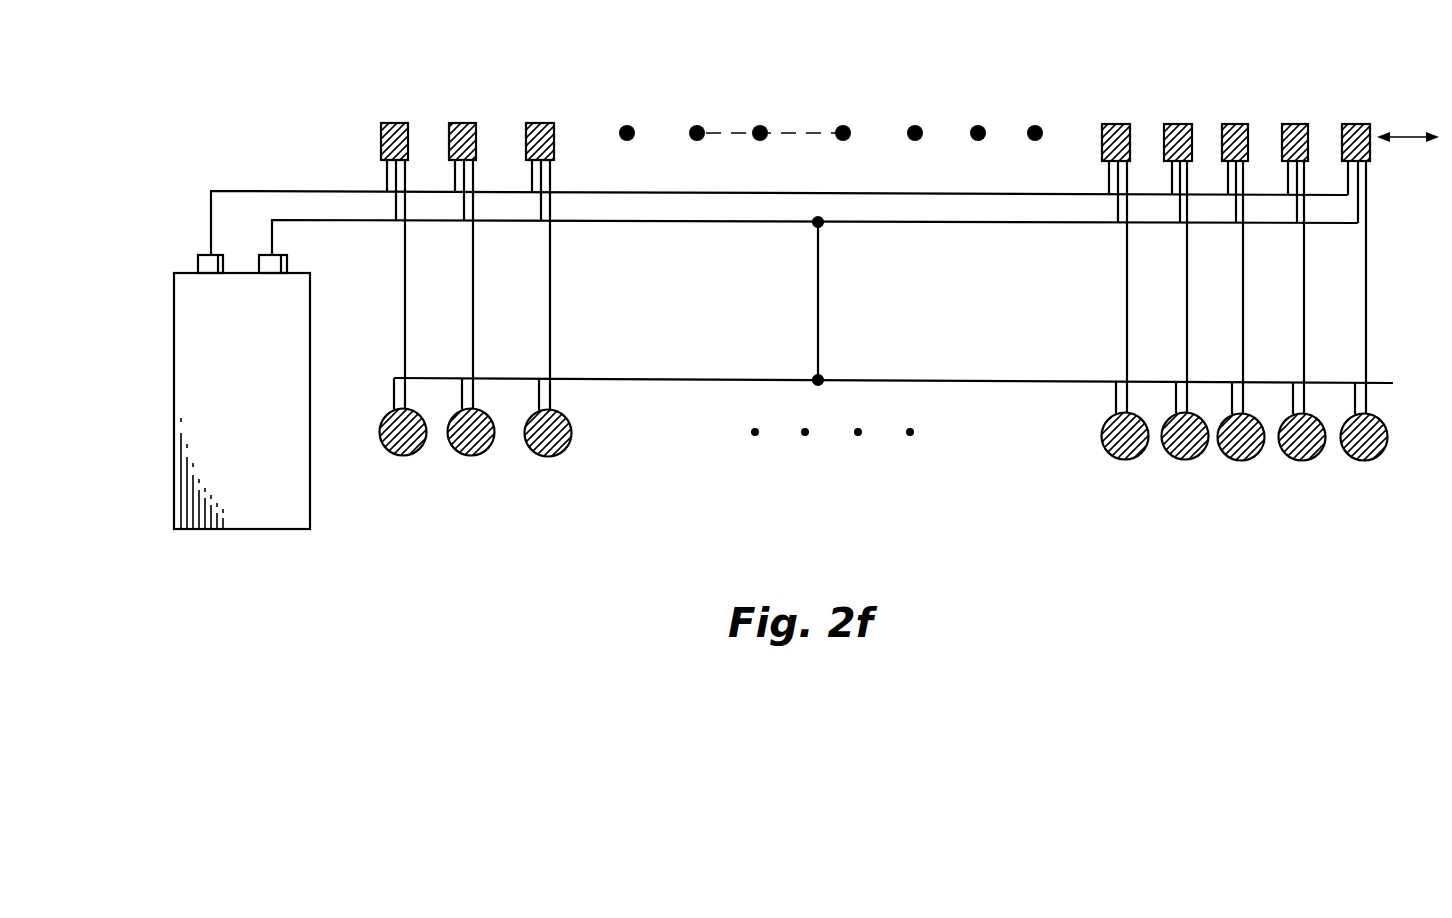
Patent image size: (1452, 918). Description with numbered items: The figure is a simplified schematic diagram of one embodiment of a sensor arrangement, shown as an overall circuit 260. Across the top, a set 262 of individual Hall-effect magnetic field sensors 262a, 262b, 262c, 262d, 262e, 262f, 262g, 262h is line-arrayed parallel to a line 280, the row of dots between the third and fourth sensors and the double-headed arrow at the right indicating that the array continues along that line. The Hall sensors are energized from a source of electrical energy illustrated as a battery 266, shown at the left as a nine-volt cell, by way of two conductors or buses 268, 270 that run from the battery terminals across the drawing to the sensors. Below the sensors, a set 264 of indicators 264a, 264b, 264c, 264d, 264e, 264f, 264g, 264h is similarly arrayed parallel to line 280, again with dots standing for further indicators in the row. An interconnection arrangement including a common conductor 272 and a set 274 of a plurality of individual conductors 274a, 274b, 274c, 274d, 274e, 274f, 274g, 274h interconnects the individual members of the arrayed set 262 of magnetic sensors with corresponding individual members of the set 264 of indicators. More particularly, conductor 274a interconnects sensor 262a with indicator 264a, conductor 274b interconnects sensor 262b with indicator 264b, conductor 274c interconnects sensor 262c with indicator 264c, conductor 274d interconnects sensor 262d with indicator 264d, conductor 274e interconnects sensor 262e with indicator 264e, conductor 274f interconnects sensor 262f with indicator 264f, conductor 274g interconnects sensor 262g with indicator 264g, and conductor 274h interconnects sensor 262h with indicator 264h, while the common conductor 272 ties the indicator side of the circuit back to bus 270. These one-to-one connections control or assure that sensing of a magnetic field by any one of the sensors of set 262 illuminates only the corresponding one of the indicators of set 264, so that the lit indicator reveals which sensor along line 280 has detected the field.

The lighting circuit 260 is at (824, 550).
The set of Hall-effect magnetic field sensors 262 is at (326, 128).
The Hall-effect magnetic field sensor 262a is at (393, 123).
The Hall-effect magnetic field sensor 262b is at (468, 123).
The Hall-effect magnetic field sensor 262c is at (546, 123).
The Hall-effect magnetic field sensor 262d is at (1108, 124).
The Hall-effect magnetic field sensor 262e is at (1173, 124).
The Hall-effect magnetic field sensor 262f is at (1238, 124).
The Hall-effect magnetic field sensor 262g is at (1297, 124).
The Hall-effect magnetic field sensor 262h is at (1360, 124).
The set of indicators 264 is at (720, 434).
The indicator 264a is at (408, 457).
The indicator 264b is at (477, 457).
The indicator 264c is at (553, 457).
The indicator 264d is at (1101, 438).
The indicator 264e is at (1186, 460).
The indicator 264f is at (1242, 460).
The indicator 264g is at (1303, 460).
The indicator 264h is at (1366, 460).
The battery 266 is at (257, 529).
The conductor or bus 268 is at (211, 210).
The conductor or bus 270 is at (352, 220).
The common conductor 272 is at (820, 268).
The set of individual conductors 274 is at (390, 322).
The conductor 274a is at (404, 288).
The conductor 274b is at (473, 263).
The conductor 274c is at (553, 263).
The conductor 274d is at (1127, 248).
The conductor 274e is at (1187, 290).
The conductor 274f is at (1242, 345).
The conductor 274g is at (1304, 254).
The conductor 274h is at (1367, 345).
The line 280 is at (760, 133).